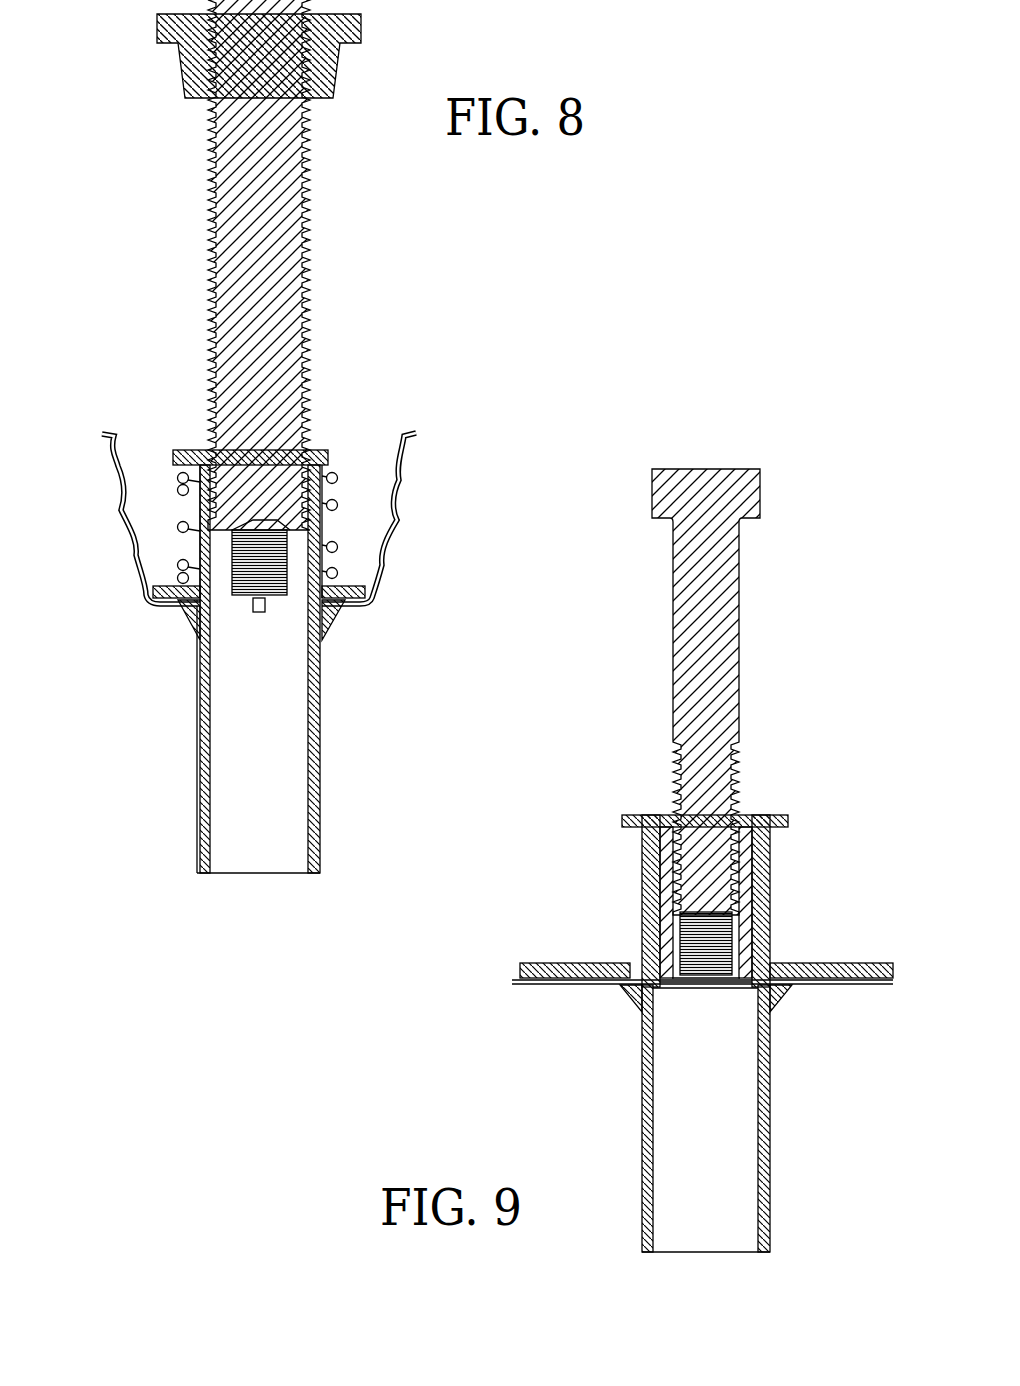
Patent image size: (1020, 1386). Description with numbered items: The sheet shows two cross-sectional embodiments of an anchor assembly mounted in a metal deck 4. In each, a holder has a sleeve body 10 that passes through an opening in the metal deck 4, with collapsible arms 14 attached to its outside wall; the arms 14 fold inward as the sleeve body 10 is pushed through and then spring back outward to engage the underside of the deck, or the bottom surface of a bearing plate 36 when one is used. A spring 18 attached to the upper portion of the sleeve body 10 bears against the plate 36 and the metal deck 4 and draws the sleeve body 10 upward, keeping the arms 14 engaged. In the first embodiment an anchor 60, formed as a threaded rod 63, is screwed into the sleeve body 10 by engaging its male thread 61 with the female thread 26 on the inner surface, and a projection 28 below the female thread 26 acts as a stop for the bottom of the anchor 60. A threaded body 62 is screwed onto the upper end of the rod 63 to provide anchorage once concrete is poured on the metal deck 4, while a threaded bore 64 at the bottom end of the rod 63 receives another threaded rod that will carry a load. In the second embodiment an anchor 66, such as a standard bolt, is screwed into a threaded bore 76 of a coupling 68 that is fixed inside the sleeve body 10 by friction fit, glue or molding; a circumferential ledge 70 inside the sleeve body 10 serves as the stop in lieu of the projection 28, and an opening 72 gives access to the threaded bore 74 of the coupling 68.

In FIG. 8, the metal deck 4 is at (405, 462).
In FIG. 9, the metal deck 4 is at (530, 983).
In FIG. 8, the sleeve body 10 is at (322, 758).
In FIG. 9, the sleeve body 10 is at (772, 1183).
In FIG. 8, the collapsible arms 14 is at (182, 614).
In FIG. 9, the collapsible arms 14 is at (630, 990).
In FIG. 8, the spring 18 is at (331, 470).
In FIG. 9, the spring 18 is at (782, 840).
In FIG. 8, the female thread 26 is at (312, 570).
In FIG. 8, the projection 28 is at (258, 612).
In FIG. 8, the plate 36 is at (143, 587).
In FIG. 9, the plate 36 is at (810, 963).
In FIG. 8, the anchor 60 is at (207, 275).
In FIG. 8, the male thread 61 is at (300, 362).
In FIG. 8, the threaded body 62 is at (157, 38).
In FIG. 8, the threaded rod 63 is at (232, 183).
In FIG. 8, the threaded bore 64 is at (290, 545).
In FIG. 9, the anchor 66 is at (740, 625).
In FIG. 9, the coupling 68 is at (740, 912).
In FIG. 9, the circumferential ledge 70 is at (745, 982).
In FIG. 9, the opening 72 is at (685, 982).
In FIG. 9, the threaded bore 74 is at (660, 915).
In FIG. 9, the threaded bore 76 is at (662, 862).